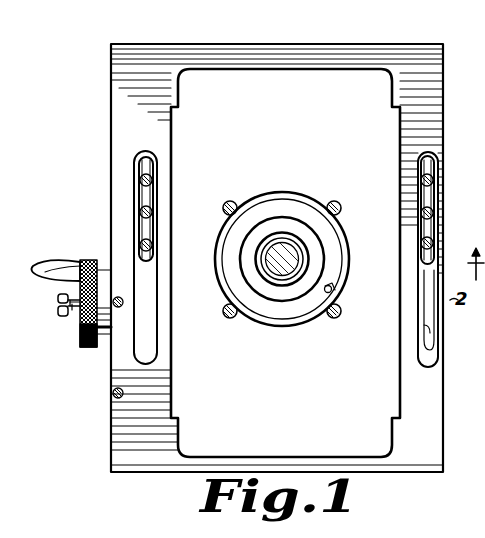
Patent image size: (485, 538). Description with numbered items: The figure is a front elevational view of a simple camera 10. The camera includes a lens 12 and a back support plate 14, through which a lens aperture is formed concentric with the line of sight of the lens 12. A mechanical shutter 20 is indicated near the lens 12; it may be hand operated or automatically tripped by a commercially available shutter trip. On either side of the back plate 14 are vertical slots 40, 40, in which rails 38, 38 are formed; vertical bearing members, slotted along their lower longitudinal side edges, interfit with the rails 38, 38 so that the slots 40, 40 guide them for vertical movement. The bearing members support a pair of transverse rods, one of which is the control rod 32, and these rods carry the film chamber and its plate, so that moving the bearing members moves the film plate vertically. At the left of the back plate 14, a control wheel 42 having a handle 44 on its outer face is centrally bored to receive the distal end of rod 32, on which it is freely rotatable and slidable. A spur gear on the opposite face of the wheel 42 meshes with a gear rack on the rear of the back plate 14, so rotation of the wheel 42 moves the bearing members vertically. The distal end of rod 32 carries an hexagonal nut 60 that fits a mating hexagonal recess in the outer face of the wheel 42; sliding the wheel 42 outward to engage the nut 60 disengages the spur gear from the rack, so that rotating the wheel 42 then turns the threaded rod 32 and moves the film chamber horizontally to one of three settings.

The simple camera 10 is at (88, 153).
The lens 12 is at (285, 257).
The back support plate 14 is at (417, 60).
The mechanical shutter 20 is at (331, 286).
The transverse rod 32 is at (75, 312).
The rail 38 is at (157, 318).
The slot 40 is at (147, 292).
The control wheel 42 is at (80, 347).
The handle 44 is at (48, 270).
The hexagonal nut 60 is at (58, 300).